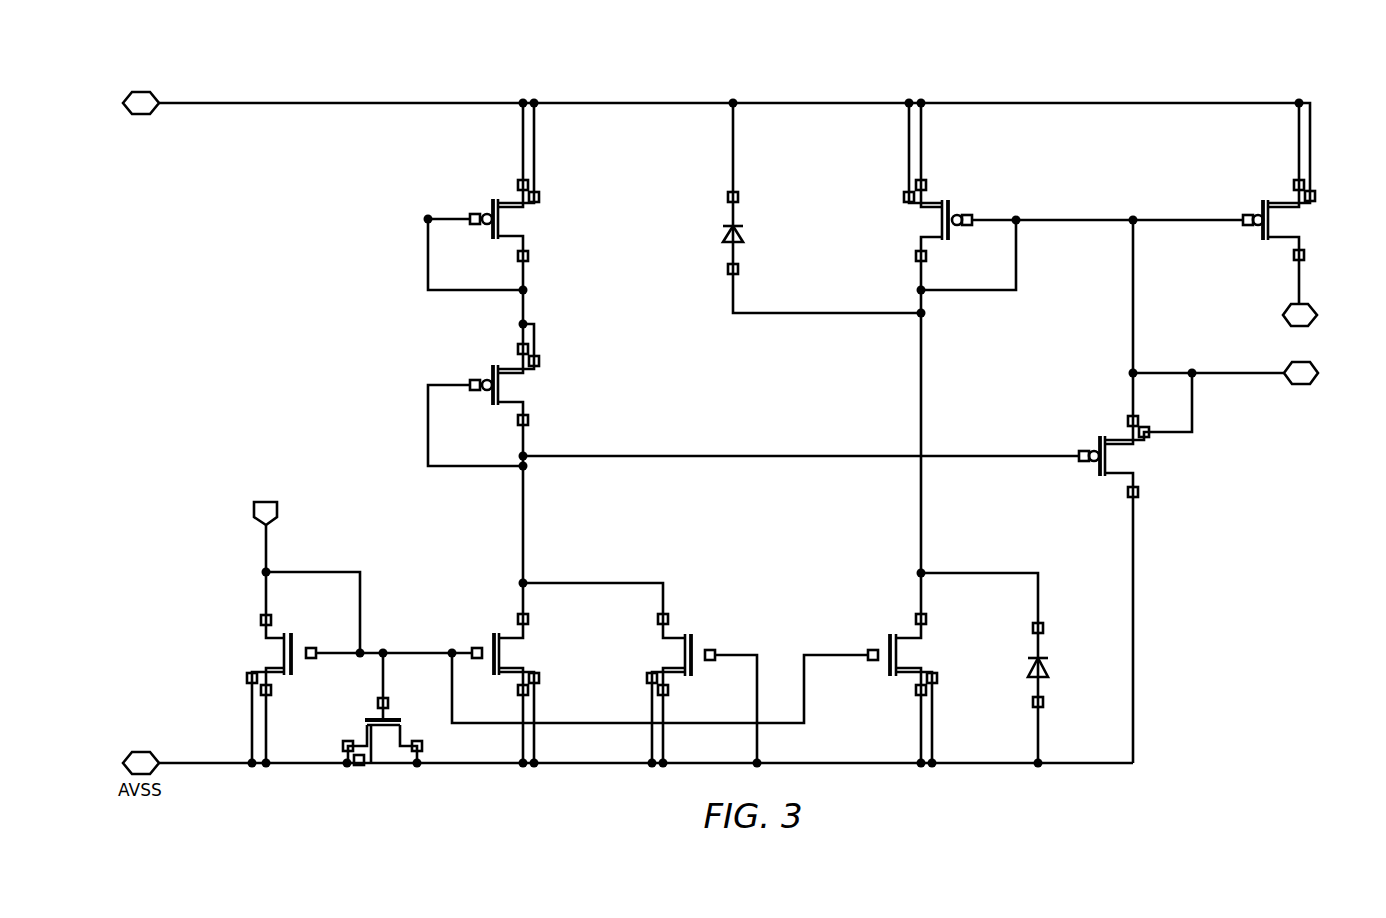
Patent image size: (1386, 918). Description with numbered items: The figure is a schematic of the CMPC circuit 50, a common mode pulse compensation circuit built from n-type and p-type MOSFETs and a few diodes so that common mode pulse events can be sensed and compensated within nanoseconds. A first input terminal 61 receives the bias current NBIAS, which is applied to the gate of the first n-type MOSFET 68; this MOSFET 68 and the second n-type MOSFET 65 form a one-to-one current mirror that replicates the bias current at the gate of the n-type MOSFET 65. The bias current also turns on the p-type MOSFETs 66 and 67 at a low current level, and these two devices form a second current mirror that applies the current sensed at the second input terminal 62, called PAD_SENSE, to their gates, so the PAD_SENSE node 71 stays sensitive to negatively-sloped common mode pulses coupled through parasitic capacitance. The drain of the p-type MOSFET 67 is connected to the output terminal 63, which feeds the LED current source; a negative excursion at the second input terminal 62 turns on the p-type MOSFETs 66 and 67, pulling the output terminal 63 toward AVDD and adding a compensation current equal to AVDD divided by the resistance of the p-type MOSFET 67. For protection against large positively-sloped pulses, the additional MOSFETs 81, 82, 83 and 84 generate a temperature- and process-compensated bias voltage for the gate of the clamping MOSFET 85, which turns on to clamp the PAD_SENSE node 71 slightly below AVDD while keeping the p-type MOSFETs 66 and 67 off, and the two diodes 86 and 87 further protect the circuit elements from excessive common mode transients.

The CMPC circuit 50 is at (1292, 86).
The first input terminal 61 is at (252, 505).
The second input terminal 62 is at (1319, 363).
The output terminal 63 is at (1319, 305).
The n-type MOSFET MN3 65 is at (883, 628).
The p-type MOSFET MP3 66 is at (964, 200).
The p-type MOSFET MP4 67 is at (1261, 196).
The n-type MOSFET MN0 68 is at (268, 648).
The PAD_SENSE node 71 is at (1129, 226).
The MOSFET MN1 81 is at (490, 629).
The MOSFET MN2 82 is at (689, 628).
The MOSFET MP1 83 is at (486, 198).
The MOSFET MP2 84 is at (486, 364).
The MOSFET MP5 85 is at (1097, 433).
The diode D0 86 is at (1049, 652).
The diode D1 87 is at (721, 214).